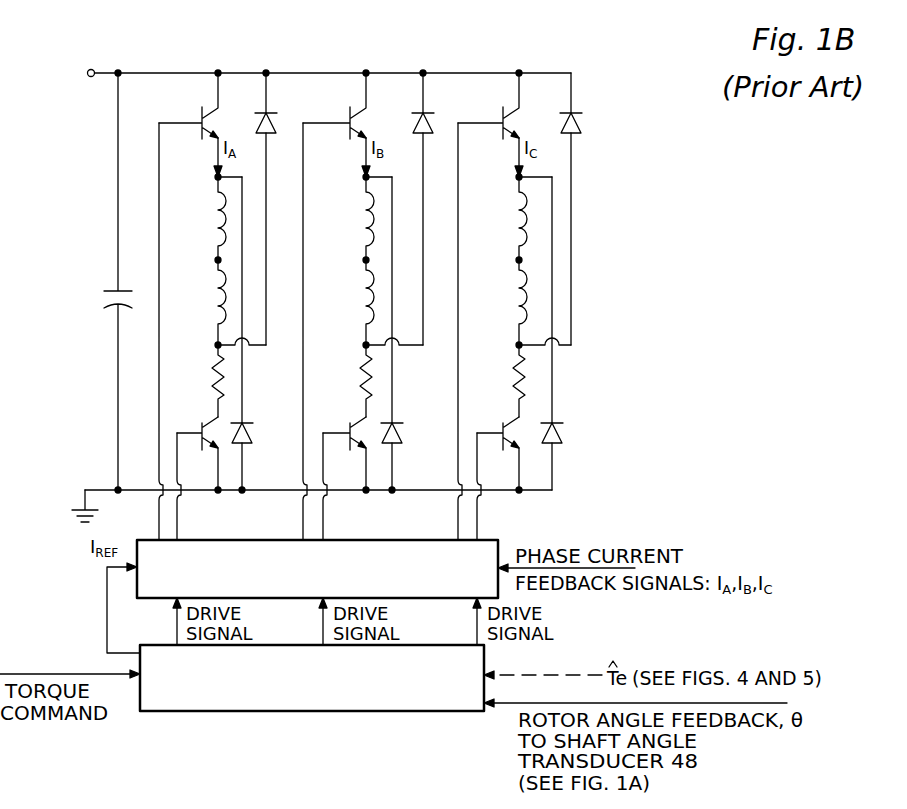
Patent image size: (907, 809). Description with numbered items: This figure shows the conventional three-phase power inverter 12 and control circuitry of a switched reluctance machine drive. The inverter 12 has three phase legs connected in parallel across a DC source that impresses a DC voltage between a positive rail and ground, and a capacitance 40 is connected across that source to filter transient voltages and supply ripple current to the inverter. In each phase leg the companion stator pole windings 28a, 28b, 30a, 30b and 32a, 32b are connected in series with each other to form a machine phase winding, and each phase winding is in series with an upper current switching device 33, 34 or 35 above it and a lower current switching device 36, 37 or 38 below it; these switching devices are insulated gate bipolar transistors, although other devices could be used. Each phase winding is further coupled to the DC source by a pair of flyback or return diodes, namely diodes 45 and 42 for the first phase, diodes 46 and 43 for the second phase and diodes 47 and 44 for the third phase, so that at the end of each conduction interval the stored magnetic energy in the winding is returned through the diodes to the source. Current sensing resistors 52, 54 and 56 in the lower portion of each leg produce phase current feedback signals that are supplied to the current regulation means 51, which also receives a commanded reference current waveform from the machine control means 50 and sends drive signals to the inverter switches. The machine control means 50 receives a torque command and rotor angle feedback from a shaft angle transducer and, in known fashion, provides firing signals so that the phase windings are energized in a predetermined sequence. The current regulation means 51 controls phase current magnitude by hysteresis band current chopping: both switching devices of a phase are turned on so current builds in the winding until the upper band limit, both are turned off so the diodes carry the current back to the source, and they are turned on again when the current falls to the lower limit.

The power inverter 12 is at (455, 44).
The stator pole winding 28a is at (216, 216).
The stator pole winding 28b is at (216, 288).
The stator pole winding 30a is at (364, 216).
The stator pole winding 30b is at (364, 288).
The stator pole winding 32a is at (517, 216).
The stator pole winding 32b is at (517, 288).
The upper current switching device 33 is at (212, 111).
The upper current switching device 34 is at (360, 111).
The upper current switching device 35 is at (513, 111).
The lower current switching device 36 is at (214, 416).
The lower current switching device 37 is at (362, 416).
The lower current switching device 38 is at (515, 416).
The capacitance 40 is at (108, 290).
The flyback diode 42 is at (258, 121).
The flyback diode 43 is at (415, 124).
The flyback diode 44 is at (578, 137).
The flyback diode 45 is at (252, 432).
The flyback diode 46 is at (402, 432).
The flyback diode 47 is at (556, 445).
The machine control means 50 is at (415, 712).
The current regulation means 51 is at (506, 539).
The resistor 52 is at (216, 372).
The resistor 54 is at (364, 372).
The resistor 56 is at (517, 372).